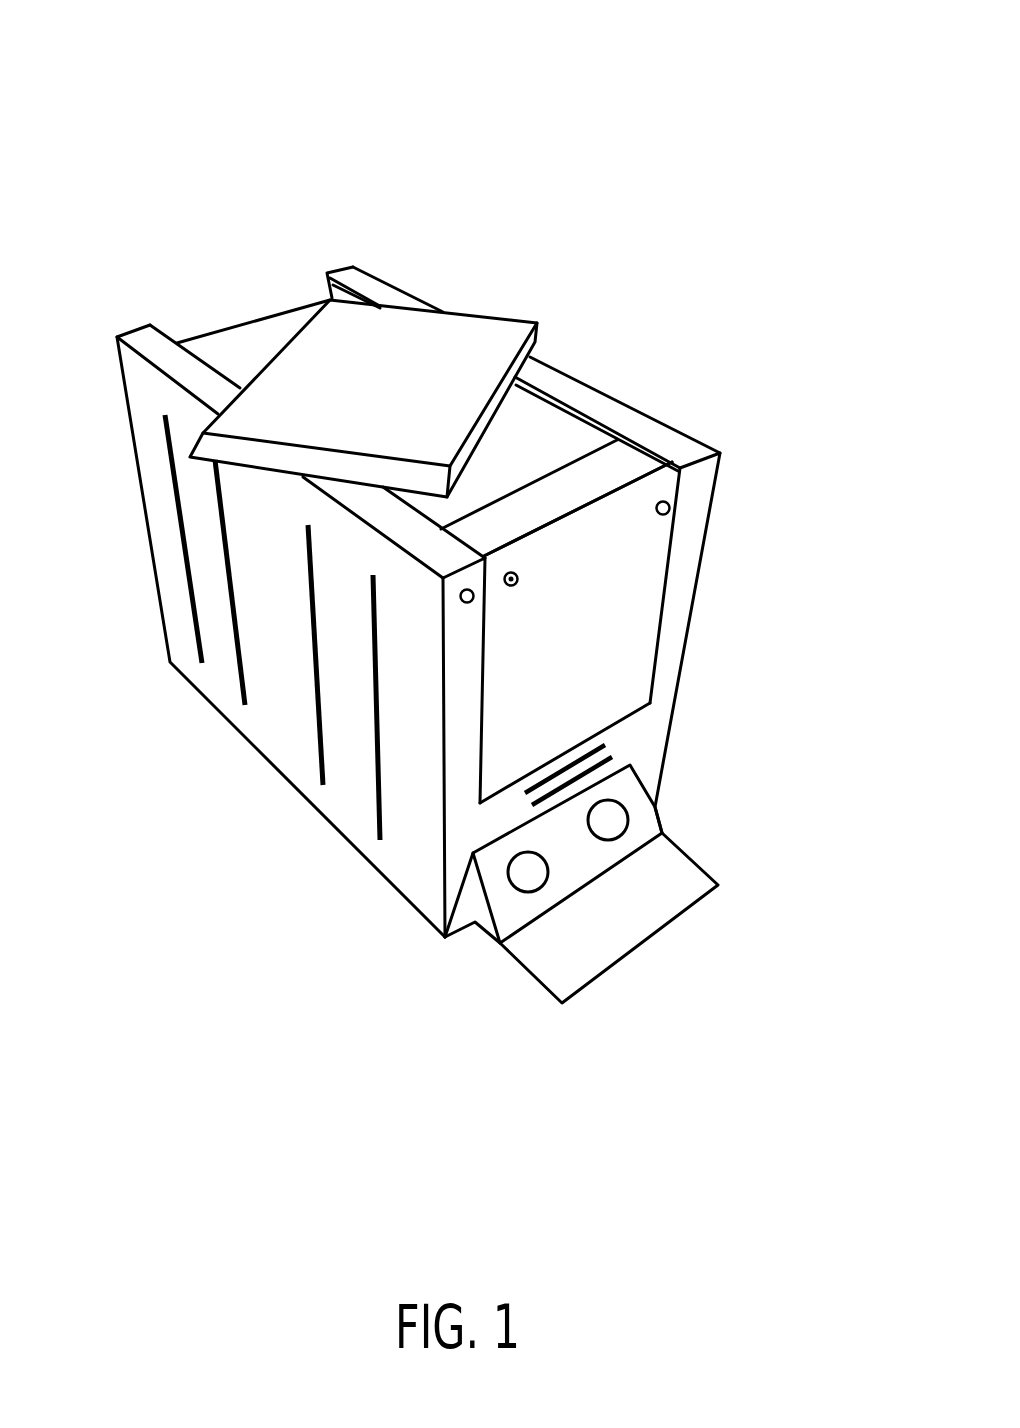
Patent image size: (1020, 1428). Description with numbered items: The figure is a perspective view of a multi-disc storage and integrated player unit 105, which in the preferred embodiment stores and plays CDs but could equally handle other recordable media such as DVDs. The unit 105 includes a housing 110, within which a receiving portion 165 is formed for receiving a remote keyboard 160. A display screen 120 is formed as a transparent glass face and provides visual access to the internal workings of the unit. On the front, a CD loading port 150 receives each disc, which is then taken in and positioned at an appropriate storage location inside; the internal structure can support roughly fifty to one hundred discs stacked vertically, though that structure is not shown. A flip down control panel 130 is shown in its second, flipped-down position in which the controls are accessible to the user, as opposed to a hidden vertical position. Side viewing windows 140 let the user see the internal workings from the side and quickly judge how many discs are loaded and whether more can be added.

The multi-disc storage and integrated player unit 105 is at (693, 159).
The housing 110 is at (600, 407).
The display screen 120 is at (607, 615).
The flip down control panel 130 is at (570, 872).
The side viewing windows 140 is at (242, 708).
The CD loading port 150 is at (525, 793).
The remote keyboard 160 is at (443, 338).
The receiving portion 165 is at (247, 340).